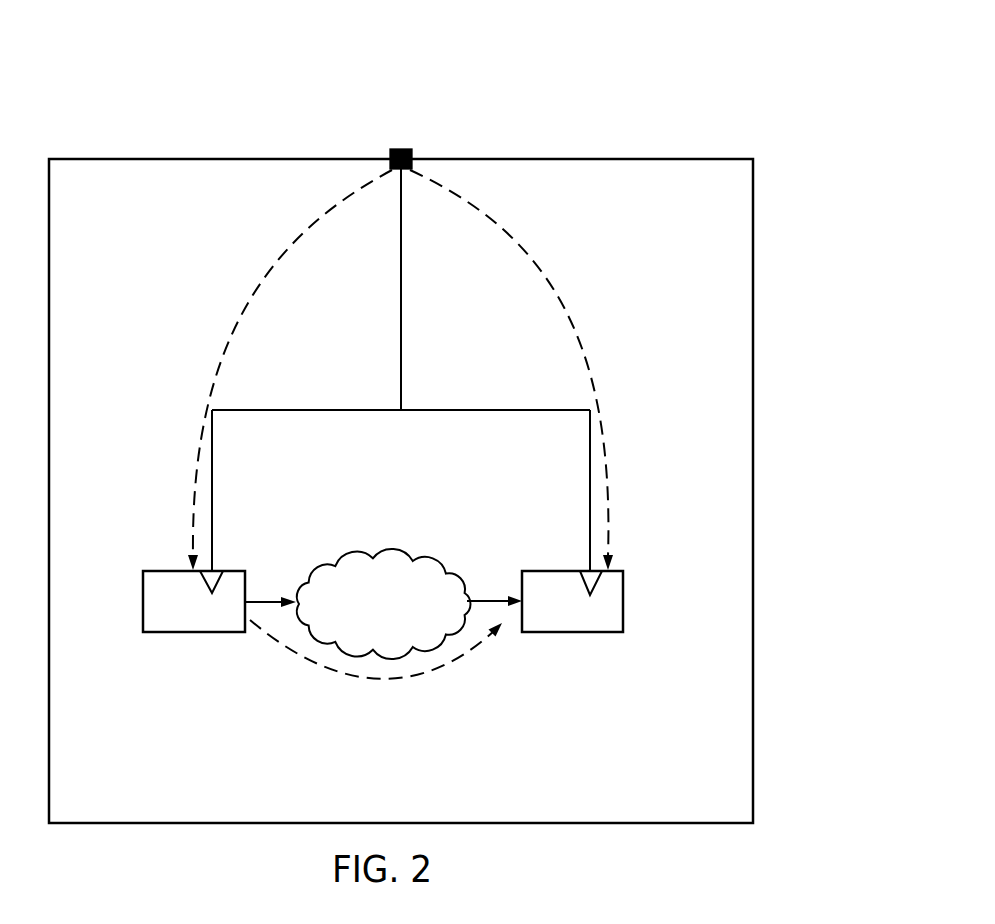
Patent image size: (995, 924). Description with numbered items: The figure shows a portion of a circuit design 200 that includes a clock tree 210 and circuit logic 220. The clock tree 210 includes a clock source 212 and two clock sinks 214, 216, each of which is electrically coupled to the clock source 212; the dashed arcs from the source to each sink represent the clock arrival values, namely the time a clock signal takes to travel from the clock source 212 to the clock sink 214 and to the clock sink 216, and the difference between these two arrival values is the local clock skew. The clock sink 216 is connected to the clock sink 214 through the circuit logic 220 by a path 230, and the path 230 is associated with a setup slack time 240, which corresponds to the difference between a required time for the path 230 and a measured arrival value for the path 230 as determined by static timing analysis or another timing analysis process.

The circuit design 200 is at (652, 69).
The clock tree 210 is at (588, 273).
The clock source 212 is at (414, 155).
The clock sink 214 is at (567, 632).
The clock sink 216 is at (193, 632).
The circuit logic 220 is at (404, 617).
The path 230 is at (293, 582).
The setup slack time 240 is at (383, 678).